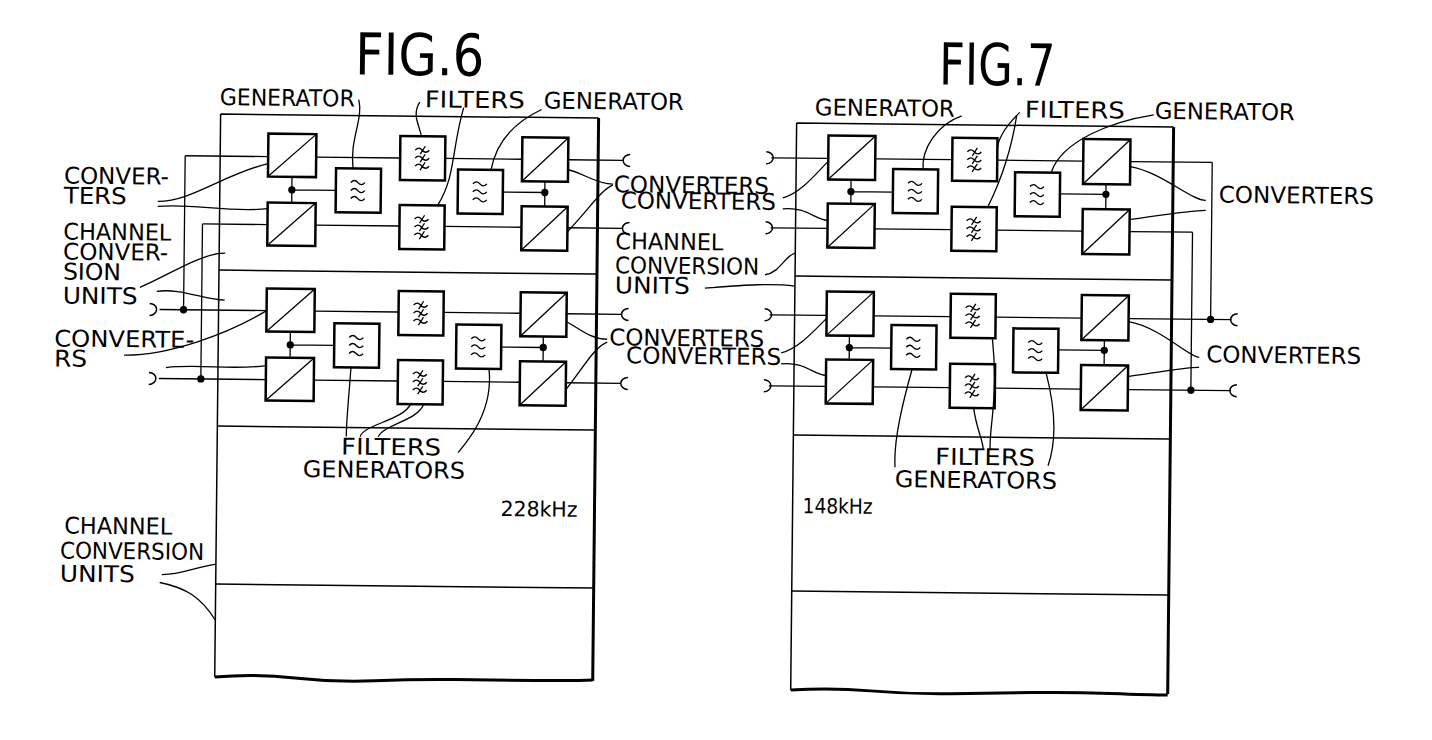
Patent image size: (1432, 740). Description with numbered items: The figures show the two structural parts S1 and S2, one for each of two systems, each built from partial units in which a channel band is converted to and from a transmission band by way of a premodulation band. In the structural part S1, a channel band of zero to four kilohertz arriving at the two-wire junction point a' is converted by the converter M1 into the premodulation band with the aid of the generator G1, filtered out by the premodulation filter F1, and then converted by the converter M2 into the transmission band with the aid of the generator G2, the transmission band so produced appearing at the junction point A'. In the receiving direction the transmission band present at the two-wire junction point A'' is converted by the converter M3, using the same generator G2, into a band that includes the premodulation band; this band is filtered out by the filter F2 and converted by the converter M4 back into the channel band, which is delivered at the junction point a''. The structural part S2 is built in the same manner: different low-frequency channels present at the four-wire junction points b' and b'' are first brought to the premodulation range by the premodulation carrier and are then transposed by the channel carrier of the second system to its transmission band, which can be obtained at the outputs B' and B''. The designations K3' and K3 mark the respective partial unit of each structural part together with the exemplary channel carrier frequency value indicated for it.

In FIG. 6, the converter M1 is at (567, 165).
In FIG. 6, the converter M2 is at (267, 152).
In FIG. 6, the converter M3 is at (267, 238).
In FIG. 6, the converter M4 is at (567, 235).
In FIG. 6, the premodulation filter F1 is at (399, 150).
In FIG. 6, the premodulation filter F2 is at (444, 230).
In FIG. 6, the generator G1 is at (488, 169).
In FIG. 6, the generator G2 is at (357, 213).
In FIG. 6, the structural part S1 is at (403, 156).
In FIG. 7, the structural part S2 is at (992, 163).
In FIG. 6, the channel conversion equipment (228 kHz) K3' is at (407, 399).
In FIG. 7, the channel conversion equipment (148 kHz) K3 is at (982, 409).
In FIG. 6, the two-wire junction point A' is at (157, 238).
In FIG. 6, the two-wire junction point A'' is at (165, 306).
In FIG. 6, the two-wire junction point a' is at (637, 236).
In FIG. 6, the two-wire junction point a'' is at (639, 304).
In FIG. 7, the four-wire junction point b' is at (758, 234).
In FIG. 7, the four-wire junction point b'' is at (756, 305).
In FIG. 7, the four-wire junction point B' is at (1235, 246).
In FIG. 7, the four-wire junction point B'' is at (1228, 316).